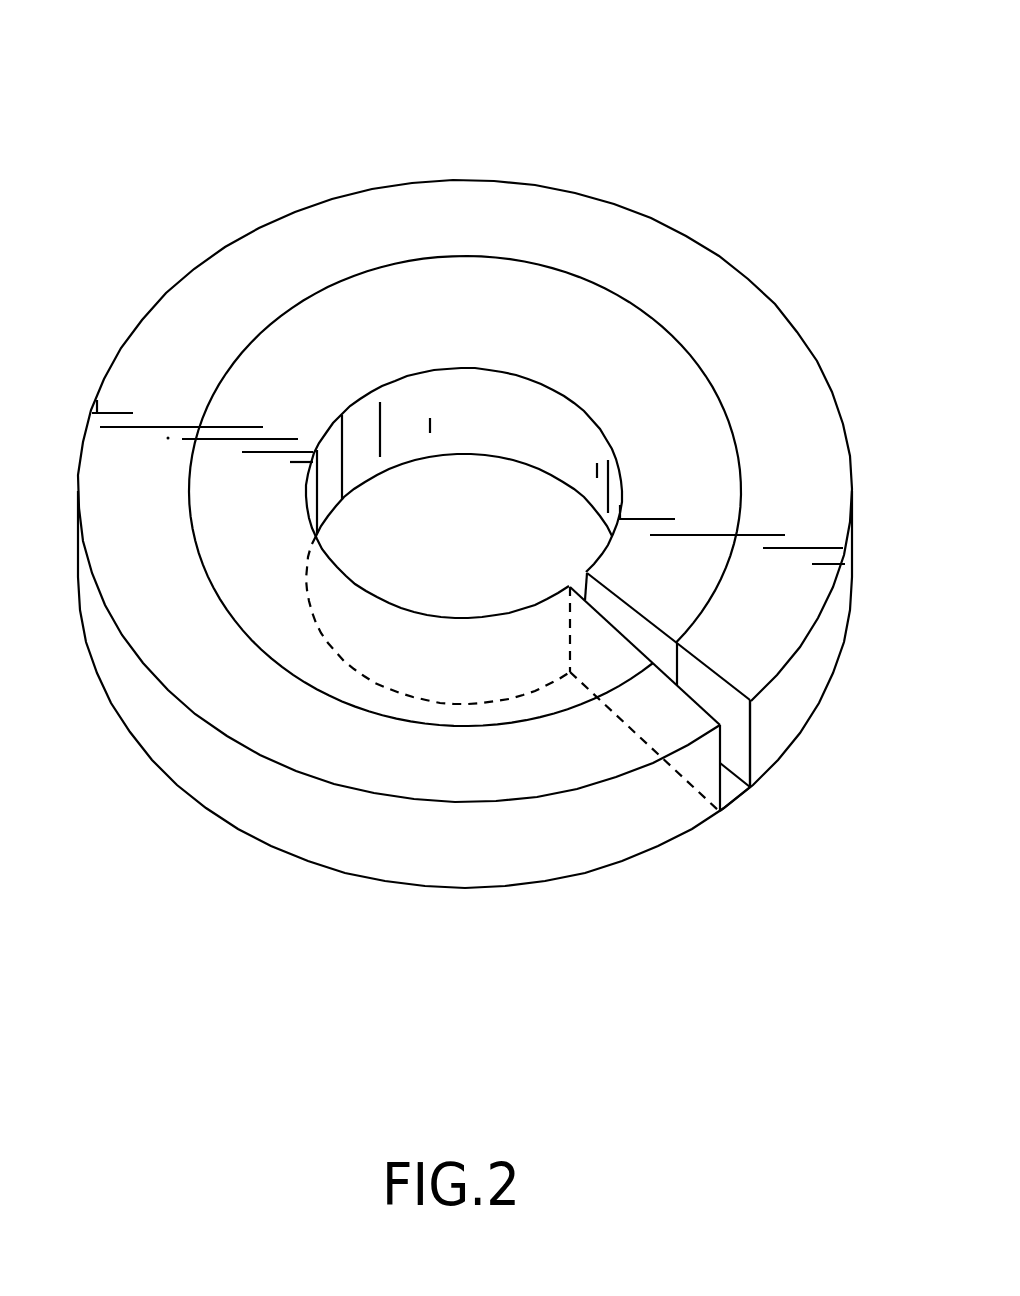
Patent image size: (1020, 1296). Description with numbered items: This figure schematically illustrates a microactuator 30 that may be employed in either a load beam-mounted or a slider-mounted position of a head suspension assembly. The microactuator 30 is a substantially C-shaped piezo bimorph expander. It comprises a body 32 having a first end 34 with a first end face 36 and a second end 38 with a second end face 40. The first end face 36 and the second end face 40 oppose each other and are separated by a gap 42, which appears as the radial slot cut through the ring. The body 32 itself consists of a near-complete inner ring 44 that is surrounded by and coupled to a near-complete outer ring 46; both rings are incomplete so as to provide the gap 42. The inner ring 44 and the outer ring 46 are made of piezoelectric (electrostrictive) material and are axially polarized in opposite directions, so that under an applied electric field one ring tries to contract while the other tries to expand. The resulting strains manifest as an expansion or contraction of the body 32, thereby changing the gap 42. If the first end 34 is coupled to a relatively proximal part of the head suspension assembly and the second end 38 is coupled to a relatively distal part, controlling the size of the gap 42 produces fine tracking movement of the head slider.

The microactuator 30 is at (497, 493).
The body 32 is at (763, 294).
The first end 34 is at (722, 768).
The first end face 36 is at (650, 697).
The second end 38 is at (749, 758).
The second end face 40 is at (710, 695).
The gap 42 is at (735, 800).
The inner ring 44 is at (365, 368).
The outer ring 46 is at (238, 330).